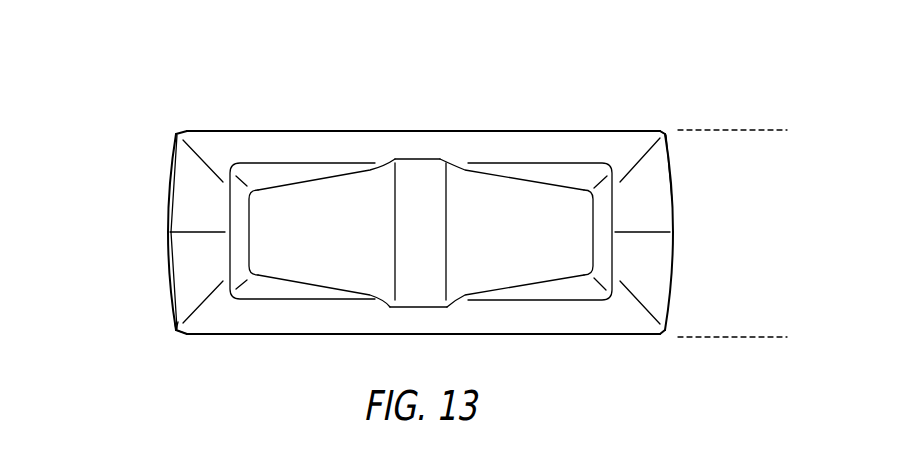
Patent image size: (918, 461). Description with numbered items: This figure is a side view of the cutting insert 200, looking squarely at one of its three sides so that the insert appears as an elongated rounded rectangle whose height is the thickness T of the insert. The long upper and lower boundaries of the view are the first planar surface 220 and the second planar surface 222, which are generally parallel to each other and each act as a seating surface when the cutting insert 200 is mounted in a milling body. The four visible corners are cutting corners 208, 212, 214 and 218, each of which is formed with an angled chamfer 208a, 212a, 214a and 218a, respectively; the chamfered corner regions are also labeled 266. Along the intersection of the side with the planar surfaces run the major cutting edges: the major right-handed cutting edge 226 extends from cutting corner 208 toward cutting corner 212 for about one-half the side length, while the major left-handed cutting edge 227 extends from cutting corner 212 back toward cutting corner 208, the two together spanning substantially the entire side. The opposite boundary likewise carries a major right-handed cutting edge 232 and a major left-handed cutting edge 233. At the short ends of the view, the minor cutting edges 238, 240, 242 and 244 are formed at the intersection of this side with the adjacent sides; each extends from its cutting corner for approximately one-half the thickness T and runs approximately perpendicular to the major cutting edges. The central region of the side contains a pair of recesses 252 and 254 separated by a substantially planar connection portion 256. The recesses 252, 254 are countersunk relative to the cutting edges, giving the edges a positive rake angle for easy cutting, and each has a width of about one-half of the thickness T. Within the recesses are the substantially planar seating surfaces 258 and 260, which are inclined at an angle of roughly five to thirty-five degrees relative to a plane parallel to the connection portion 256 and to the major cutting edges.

The cutting insert 200 is at (690, 0).
The cutting corner 208 is at (170, 331).
The angled chamfer 208a is at (177, 331).
The cutting corner 212 is at (665, 343).
The angled chamfer 212a is at (660, 340).
The cutting corner 214 is at (168, 119).
The angled chamfer 214a is at (184, 129).
The cutting corner 218 is at (667, 127).
The angled chamfer 218a is at (673, 141).
The first planar surface 220 is at (418, 335).
The second planar surface 222 is at (372, 130).
The major right-handed cutting edge 226 is at (335, 335).
The major left-handed cutting edge 227 is at (545, 335).
The major right-handed cutting edge 232 is at (523, 130).
The major left-handed cutting edge 233 is at (276, 130).
The minor cutting edge 238 is at (168, 272).
The minor cutting edge 240 is at (172, 173).
The minor cutting edge 242 is at (673, 288).
The minor cutting edge 244 is at (673, 208).
The recess 252 is at (260, 188).
The recess 254 is at (594, 183).
The connection portion 256 is at (420, 187).
The seating surface 258 is at (332, 205).
The seating surface 260 is at (542, 212).
The chamfered corner 266 is at (663, 129).
The thickness T is at (769, 131).